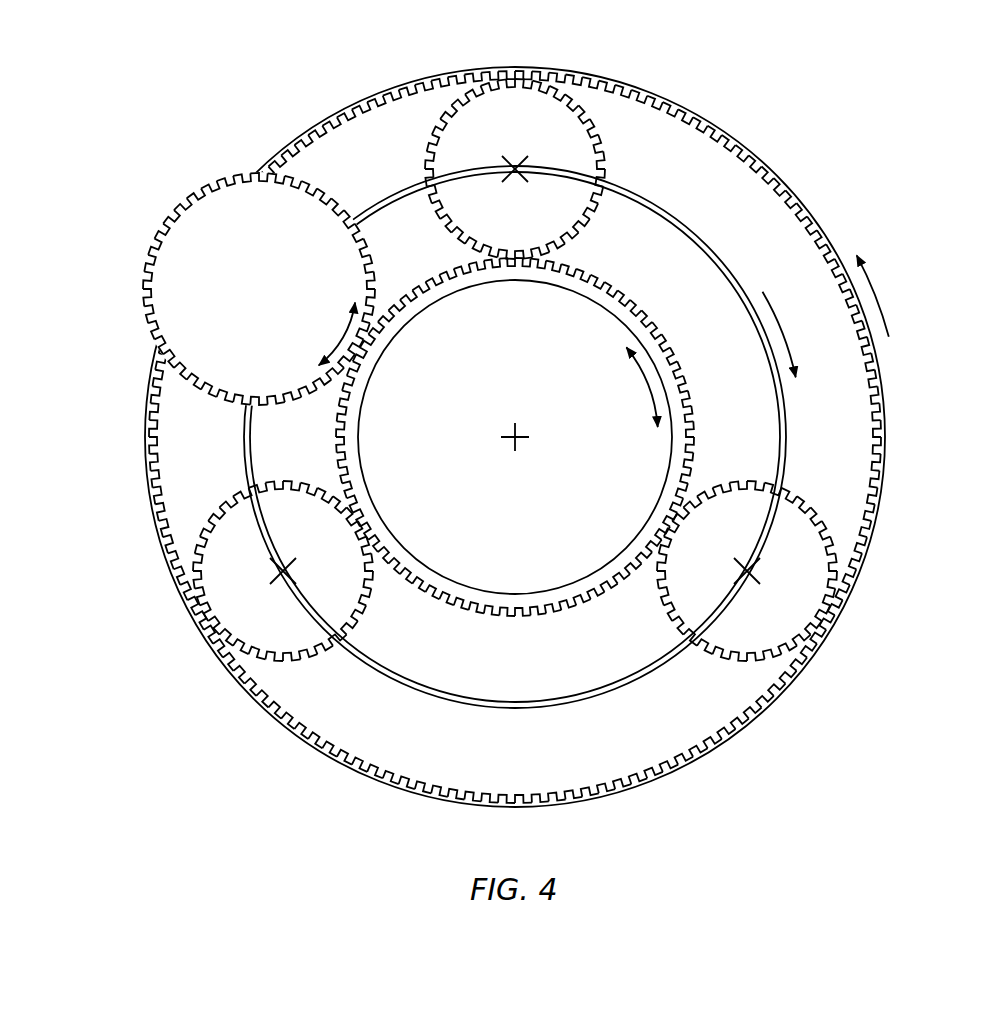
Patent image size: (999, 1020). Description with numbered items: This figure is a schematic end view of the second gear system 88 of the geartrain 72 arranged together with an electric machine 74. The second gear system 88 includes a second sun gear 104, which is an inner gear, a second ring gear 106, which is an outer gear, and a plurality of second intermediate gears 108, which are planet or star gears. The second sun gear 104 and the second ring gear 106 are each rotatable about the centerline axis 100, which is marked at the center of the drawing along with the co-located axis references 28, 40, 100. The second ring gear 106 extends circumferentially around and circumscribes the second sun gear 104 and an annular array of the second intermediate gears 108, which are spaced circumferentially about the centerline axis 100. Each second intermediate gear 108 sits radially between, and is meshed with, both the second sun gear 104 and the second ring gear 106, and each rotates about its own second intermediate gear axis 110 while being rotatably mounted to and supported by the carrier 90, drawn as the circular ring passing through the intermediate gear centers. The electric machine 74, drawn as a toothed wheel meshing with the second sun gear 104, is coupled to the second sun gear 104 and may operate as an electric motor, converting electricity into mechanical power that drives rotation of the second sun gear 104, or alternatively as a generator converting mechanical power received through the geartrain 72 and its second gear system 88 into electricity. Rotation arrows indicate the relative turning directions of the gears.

The geartrain 72 is at (520, 425).
The second gear system 88 is at (851, 96).
The second ring gear 106 is at (890, 409).
The carrier 90 is at (727, 253).
The second sun gear 104 is at (665, 445).
The central axis 28 is at (507, 475).
The shaft 40 is at (507, 475).
The centerline axis 100 is at (515, 443).
The second intermediate gears 108 is at (604, 128).
The second intermediate gear axis 110 is at (517, 170).
The electric machine 74 is at (130, 308).